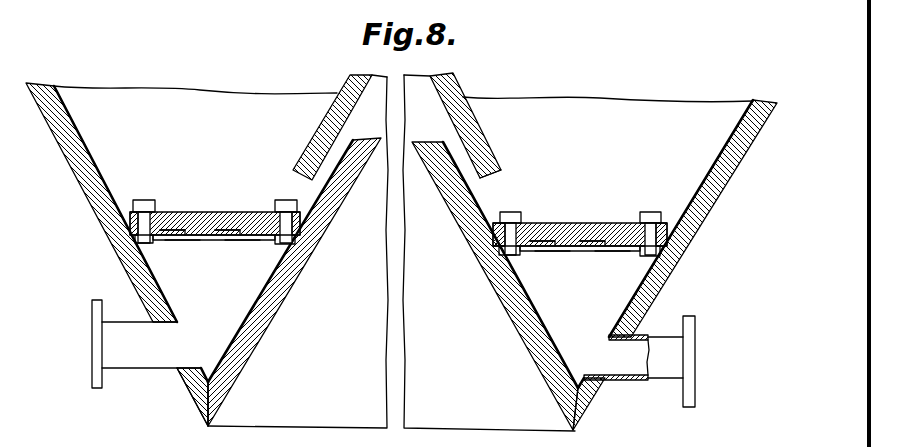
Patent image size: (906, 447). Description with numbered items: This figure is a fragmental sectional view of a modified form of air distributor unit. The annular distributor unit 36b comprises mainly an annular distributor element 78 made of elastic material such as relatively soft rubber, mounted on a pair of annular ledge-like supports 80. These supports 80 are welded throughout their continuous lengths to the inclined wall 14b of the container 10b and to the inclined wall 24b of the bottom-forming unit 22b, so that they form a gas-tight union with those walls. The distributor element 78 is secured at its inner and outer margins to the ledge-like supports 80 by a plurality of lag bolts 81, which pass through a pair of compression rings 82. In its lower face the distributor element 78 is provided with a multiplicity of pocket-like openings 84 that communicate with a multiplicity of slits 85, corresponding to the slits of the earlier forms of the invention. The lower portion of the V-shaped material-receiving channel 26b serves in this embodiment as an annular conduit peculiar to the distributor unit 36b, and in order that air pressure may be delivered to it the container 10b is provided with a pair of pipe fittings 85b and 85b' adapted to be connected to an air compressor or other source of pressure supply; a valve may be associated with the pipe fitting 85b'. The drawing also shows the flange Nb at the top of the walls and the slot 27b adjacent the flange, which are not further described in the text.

The container 10b is at (618, 106).
The inclined wall 14b is at (86, 180).
The inclined wall 24b is at (305, 264).
The V-shaped material-receiving channel 26b is at (209, 375).
The bottom-forming unit 22b is at (391, 253).
The top flange Nb is at (462, 93).
The slot between flange and wall 27b is at (500, 157).
The annular distributor unit 36b is at (245, 206).
The lag bolts 81 is at (146, 200).
The compression rings 82 is at (156, 212).
The annular ledge-like supports 80 is at (158, 243).
The annular distributor element 78 is at (231, 240).
The pocket-like openings 84 is at (176, 237).
The slits 85 is at (168, 213).
The pipe fitting 85b' is at (134, 347).
The pipe fitting 85b is at (639, 361).